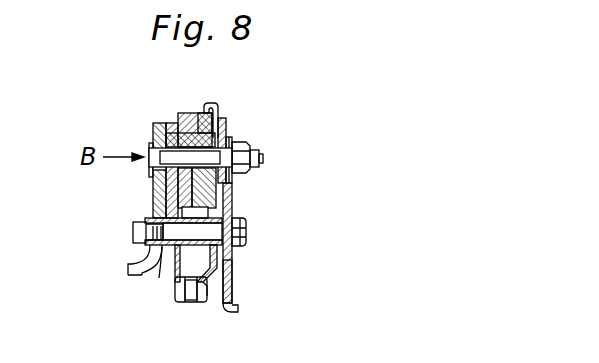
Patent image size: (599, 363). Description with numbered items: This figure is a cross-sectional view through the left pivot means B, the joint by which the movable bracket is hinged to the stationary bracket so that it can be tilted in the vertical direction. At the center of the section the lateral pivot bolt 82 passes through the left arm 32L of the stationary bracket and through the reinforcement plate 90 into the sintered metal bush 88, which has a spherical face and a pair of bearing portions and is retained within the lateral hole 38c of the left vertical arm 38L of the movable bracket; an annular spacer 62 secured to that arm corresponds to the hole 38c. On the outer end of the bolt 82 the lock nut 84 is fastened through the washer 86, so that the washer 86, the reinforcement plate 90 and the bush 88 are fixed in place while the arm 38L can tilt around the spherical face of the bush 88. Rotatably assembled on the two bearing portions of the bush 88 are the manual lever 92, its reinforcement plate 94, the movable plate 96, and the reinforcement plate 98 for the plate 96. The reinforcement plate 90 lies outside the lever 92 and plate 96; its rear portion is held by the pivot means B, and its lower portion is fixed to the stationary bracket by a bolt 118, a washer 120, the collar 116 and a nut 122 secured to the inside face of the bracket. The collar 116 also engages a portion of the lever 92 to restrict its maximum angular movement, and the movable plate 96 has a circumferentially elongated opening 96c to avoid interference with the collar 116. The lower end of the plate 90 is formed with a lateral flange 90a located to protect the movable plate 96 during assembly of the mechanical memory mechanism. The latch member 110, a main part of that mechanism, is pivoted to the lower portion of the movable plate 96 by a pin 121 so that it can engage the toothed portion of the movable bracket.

The reinforcement plate 94 is at (168, 122).
The left vertical arm 38L is at (186, 112).
The annular spacer 62 is at (203, 113).
The manual lever 92 is at (217, 106).
The sintered metal bush 88 is at (227, 128).
The lock nut 84 is at (246, 140).
The lateral pivot bolt 82 is at (264, 158).
The washer 86 is at (230, 180).
The lateral hole 38c is at (158, 178).
The reinforcement plate 90 is at (232, 205).
The circumferentially elongated opening 96c is at (247, 228).
The bolt 118 is at (243, 238).
The washer 120 is at (235, 260).
The nut 122 is at (133, 219).
The left arm 32L is at (128, 275).
The collar 116 is at (159, 271).
The reinforcement plate 98 is at (178, 303).
The latch member 110 is at (190, 303).
The movable plate 96 is at (198, 303).
The pin 121 is at (206, 287).
The lateral flange 90a is at (238, 303).